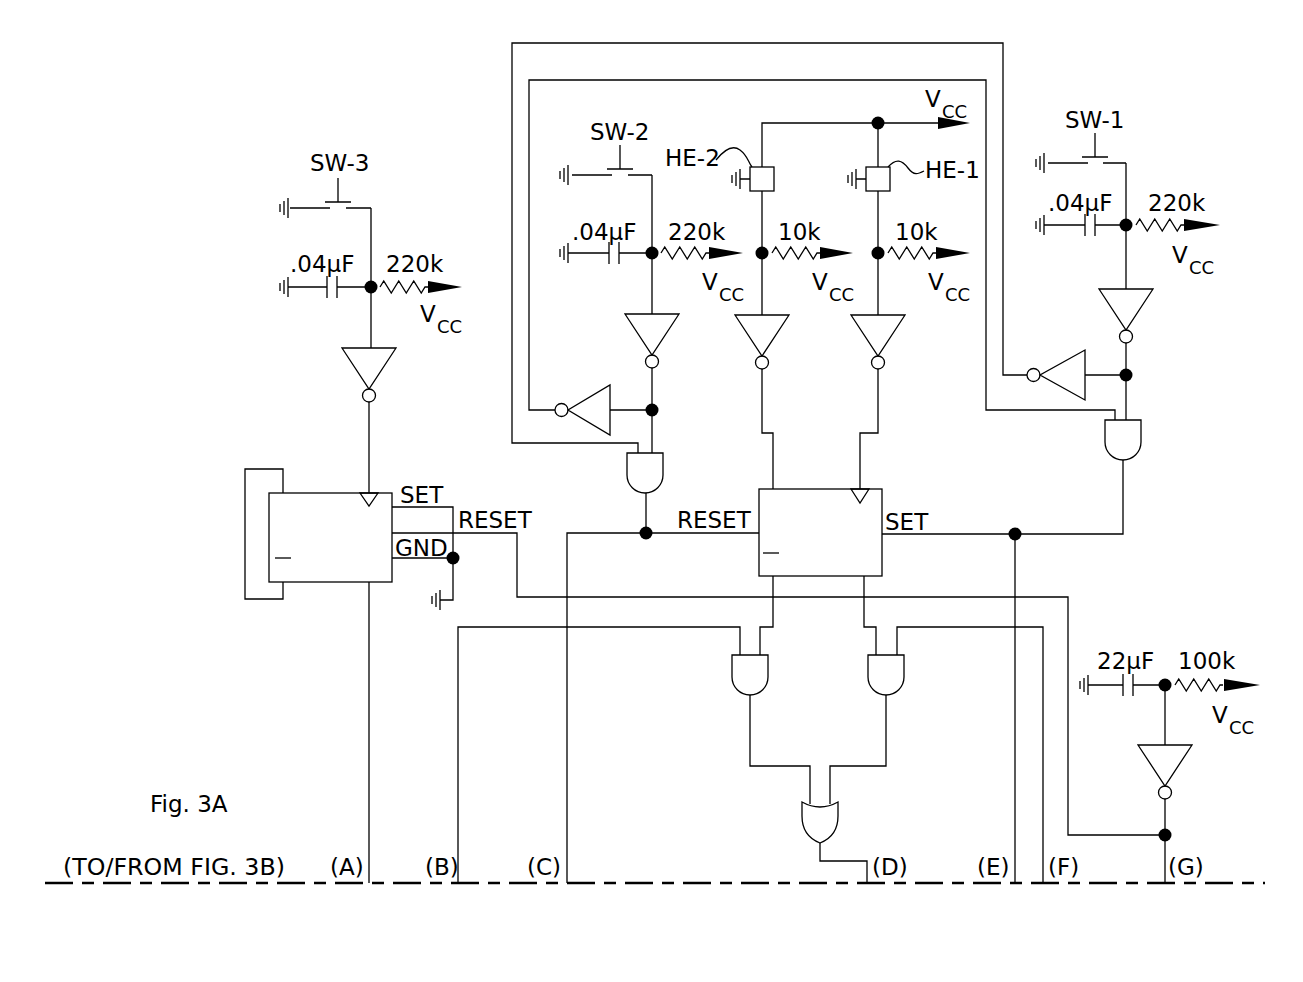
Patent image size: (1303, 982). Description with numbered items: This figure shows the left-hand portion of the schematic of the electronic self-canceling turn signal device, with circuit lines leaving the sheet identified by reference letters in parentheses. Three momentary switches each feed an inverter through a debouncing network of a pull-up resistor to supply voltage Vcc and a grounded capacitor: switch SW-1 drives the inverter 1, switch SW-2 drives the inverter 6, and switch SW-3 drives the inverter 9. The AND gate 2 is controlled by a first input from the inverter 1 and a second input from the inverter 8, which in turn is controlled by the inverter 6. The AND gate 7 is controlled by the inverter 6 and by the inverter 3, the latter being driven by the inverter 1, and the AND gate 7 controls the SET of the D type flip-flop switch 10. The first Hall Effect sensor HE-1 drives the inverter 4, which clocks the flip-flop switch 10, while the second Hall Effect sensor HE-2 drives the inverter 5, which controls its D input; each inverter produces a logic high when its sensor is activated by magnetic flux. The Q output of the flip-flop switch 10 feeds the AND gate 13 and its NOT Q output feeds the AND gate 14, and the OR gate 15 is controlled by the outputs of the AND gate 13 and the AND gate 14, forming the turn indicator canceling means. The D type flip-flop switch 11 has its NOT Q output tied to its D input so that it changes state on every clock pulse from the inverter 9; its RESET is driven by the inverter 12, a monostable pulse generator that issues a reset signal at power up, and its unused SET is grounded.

The inverter 1 is at (1126, 316).
The AND gate 2 is at (1123, 440).
The inverter 3 is at (1056, 375).
The inverter 4 is at (878, 342).
The inverter 5 is at (762, 342).
The inverter 6 is at (652, 341).
The AND gate 7 is at (645, 473).
The inverter 8 is at (582, 410).
The inverter 9 is at (369, 375).
The D type flip-flop switch 10 is at (820, 533).
The D type flip-flop switch 11 is at (330, 538).
The inverter 12 is at (1165, 772).
The AND gate 13 is at (886, 675).
The AND gate 14 is at (750, 675).
The OR gate 15 is at (820, 822).